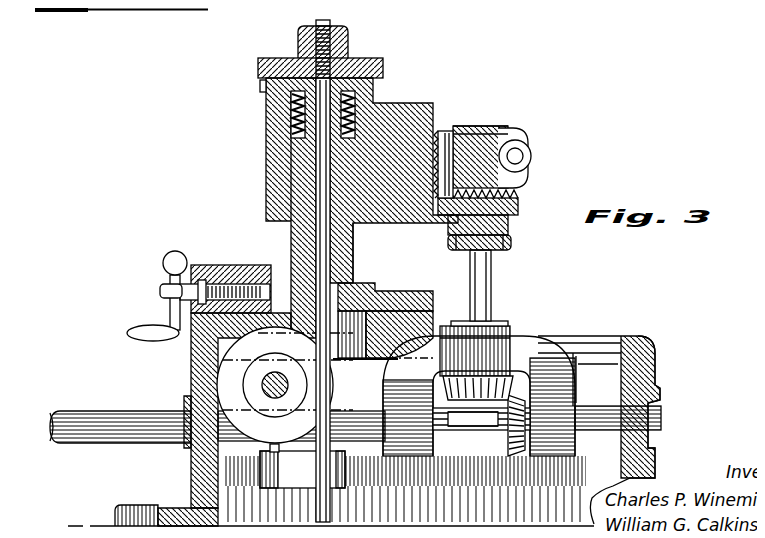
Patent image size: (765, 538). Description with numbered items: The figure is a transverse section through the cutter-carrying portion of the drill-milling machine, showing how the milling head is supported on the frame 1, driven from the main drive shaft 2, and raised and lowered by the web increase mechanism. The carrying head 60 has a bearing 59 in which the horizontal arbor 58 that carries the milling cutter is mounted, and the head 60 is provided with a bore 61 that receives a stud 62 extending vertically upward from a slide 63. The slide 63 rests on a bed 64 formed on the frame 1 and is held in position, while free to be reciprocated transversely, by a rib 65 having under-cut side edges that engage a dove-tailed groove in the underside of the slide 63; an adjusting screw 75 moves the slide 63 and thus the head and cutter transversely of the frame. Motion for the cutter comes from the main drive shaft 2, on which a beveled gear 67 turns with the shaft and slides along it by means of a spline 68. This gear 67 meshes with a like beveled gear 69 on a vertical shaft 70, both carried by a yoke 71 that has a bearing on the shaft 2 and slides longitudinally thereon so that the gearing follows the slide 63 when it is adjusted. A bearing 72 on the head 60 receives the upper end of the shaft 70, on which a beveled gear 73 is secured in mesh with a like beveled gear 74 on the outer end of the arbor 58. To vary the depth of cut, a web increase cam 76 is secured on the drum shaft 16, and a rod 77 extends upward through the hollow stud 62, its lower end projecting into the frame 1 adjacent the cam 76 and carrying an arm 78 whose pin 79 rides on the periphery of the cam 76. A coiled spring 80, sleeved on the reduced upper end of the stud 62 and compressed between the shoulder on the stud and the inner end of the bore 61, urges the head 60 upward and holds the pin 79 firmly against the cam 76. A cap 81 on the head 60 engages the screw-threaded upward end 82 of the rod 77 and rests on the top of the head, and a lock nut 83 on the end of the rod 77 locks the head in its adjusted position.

The supporting base or frame 1 is at (183, 468).
The main drive shaft 2 is at (85, 408).
The drum shaft 16 is at (276, 370).
The arbor 58 is at (515, 148).
The bearing 59 is at (485, 118).
The carrying head 60 is at (400, 95).
The bore 61 is at (284, 106).
The stud 62 is at (290, 163).
The slide 63 is at (386, 285).
The bed 64 is at (420, 287).
The rib 65 is at (430, 308).
The beveled gear 67 is at (503, 445).
The spline 68 is at (478, 418).
The beveled gear 69 is at (530, 335).
The vertical shaft 70 is at (485, 285).
The yoke 71 is at (515, 342).
The bearing 72 is at (505, 233).
The beveled gear 73 is at (508, 188).
The beveled gear 74 is at (443, 123).
The adjusting screw 75 is at (220, 258).
The web increase cam 76 is at (285, 385).
The rod 77 is at (345, 232).
The arm 78 is at (302, 469).
The pin 79 is at (262, 446).
The coiled spring 80 is at (256, 88).
The cap 81 is at (357, 55).
The screw-threaded upward end 82 is at (322, 20).
The lock nut 83 is at (290, 25).